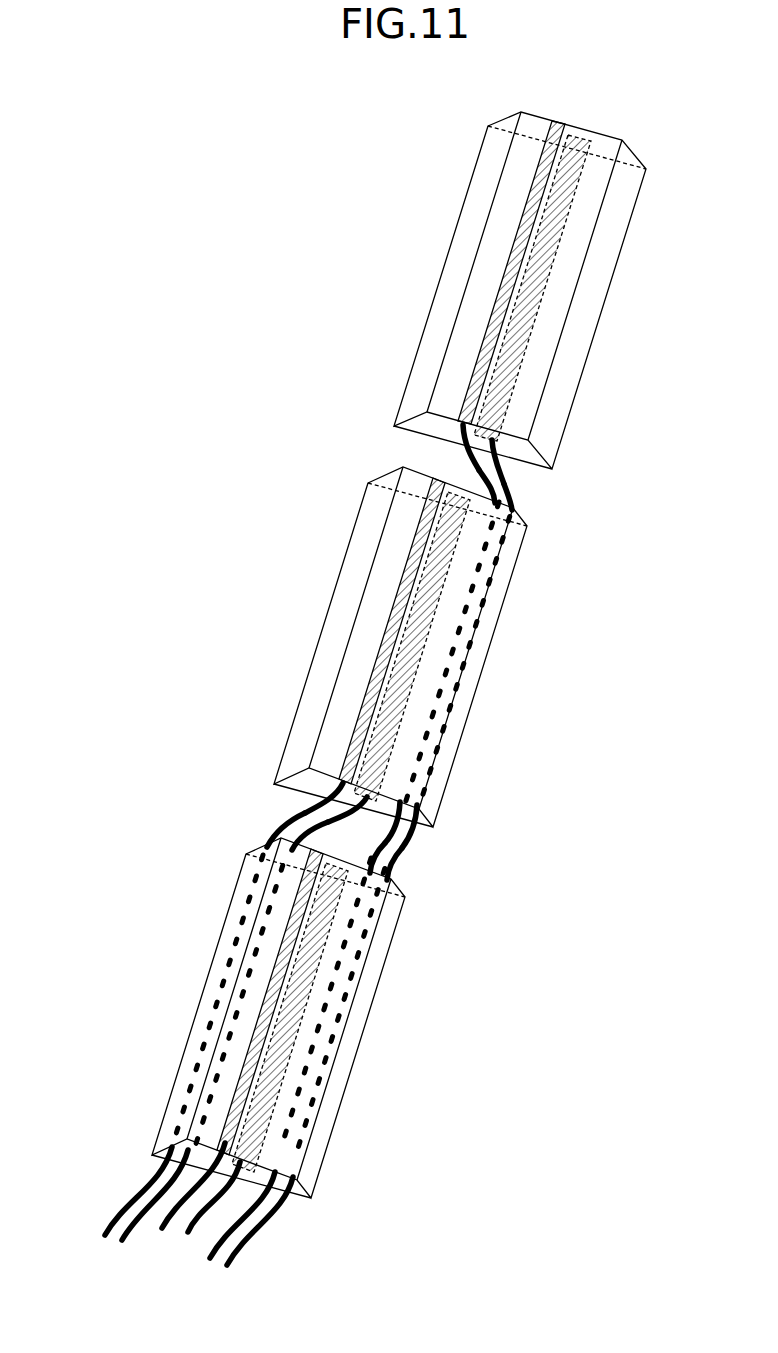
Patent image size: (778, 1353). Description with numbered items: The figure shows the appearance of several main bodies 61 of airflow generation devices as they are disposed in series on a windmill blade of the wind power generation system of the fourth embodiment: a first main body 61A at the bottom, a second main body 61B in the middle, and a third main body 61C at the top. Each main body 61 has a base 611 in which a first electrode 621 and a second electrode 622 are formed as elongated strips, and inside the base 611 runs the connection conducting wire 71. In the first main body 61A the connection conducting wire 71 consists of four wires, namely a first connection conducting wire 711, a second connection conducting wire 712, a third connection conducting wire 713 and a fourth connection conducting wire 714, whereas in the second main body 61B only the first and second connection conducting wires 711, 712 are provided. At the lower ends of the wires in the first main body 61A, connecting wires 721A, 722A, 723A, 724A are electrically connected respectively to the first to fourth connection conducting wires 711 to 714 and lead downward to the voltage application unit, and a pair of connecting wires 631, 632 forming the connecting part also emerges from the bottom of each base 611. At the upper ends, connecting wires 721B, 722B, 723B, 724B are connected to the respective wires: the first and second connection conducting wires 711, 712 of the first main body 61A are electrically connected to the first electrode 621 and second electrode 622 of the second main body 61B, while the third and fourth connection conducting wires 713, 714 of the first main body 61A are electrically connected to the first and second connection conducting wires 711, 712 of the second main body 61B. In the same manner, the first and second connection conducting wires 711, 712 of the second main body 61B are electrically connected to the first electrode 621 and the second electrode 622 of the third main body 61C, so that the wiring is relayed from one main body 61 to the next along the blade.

The main body 61 is at (352, 655).
The first main body 61A is at (188, 998).
The second main body 61B is at (310, 627).
The third main body 61C is at (428, 269).
The base 611 is at (502, 142).
The first electrode 621 is at (540, 190).
The second electrode 622 is at (552, 232).
The connecting wire 631 is at (492, 446).
The connecting wire 632 is at (520, 466).
The connection conducting wire 71 is at (336, 825).
The first connection conducting wire 711 is at (476, 636).
The second connection conducting wire 712 is at (468, 665).
The third connection conducting wire 713 is at (338, 1046).
The fourth connection conducting wire 714 is at (333, 1080).
The connecting wire 721A is at (165, 1174).
The connecting wire 722A is at (142, 1196).
The connecting wire 721B is at (300, 826).
The connecting wire 722B is at (292, 842).
The connecting wire 723A is at (402, 805).
The connecting wire 724A is at (396, 832).
The connecting wire 723B is at (508, 478).
The connecting wire 724B is at (517, 498).